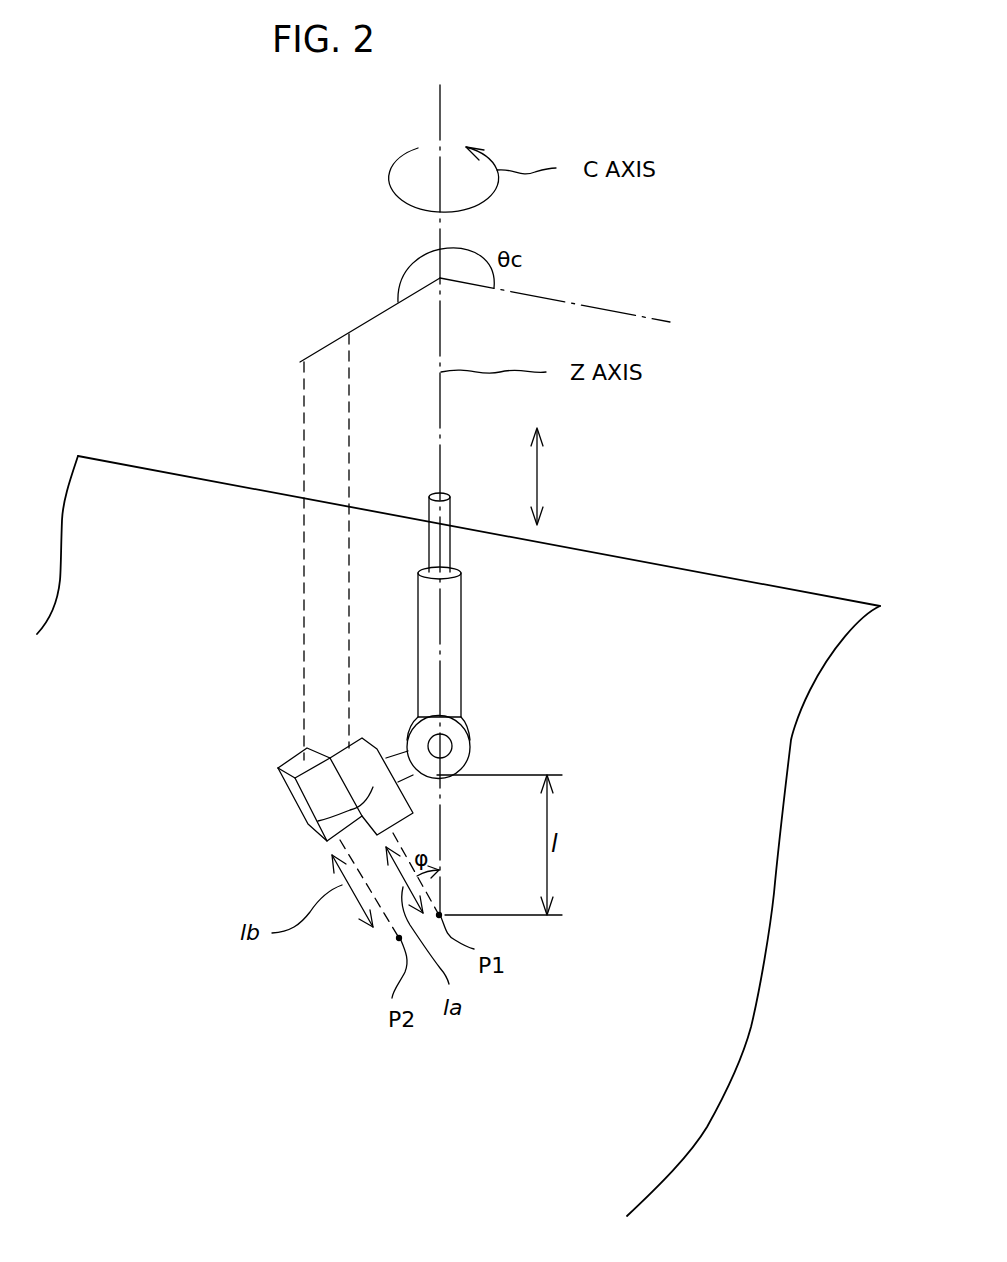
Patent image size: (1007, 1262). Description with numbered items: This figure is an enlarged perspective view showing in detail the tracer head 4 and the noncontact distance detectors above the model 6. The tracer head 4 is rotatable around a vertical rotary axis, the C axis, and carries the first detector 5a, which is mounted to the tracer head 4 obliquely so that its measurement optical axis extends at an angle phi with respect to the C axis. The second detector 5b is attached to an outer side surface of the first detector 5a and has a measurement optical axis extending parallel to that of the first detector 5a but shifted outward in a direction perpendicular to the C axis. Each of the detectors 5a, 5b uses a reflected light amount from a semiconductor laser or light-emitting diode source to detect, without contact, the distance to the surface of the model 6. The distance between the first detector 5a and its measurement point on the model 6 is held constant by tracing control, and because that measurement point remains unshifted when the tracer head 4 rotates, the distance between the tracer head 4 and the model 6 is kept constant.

The tracer head 4 is at (461, 648).
The first detector 5a is at (373, 787).
The second detector 5b is at (293, 795).
The model 6 is at (695, 570).